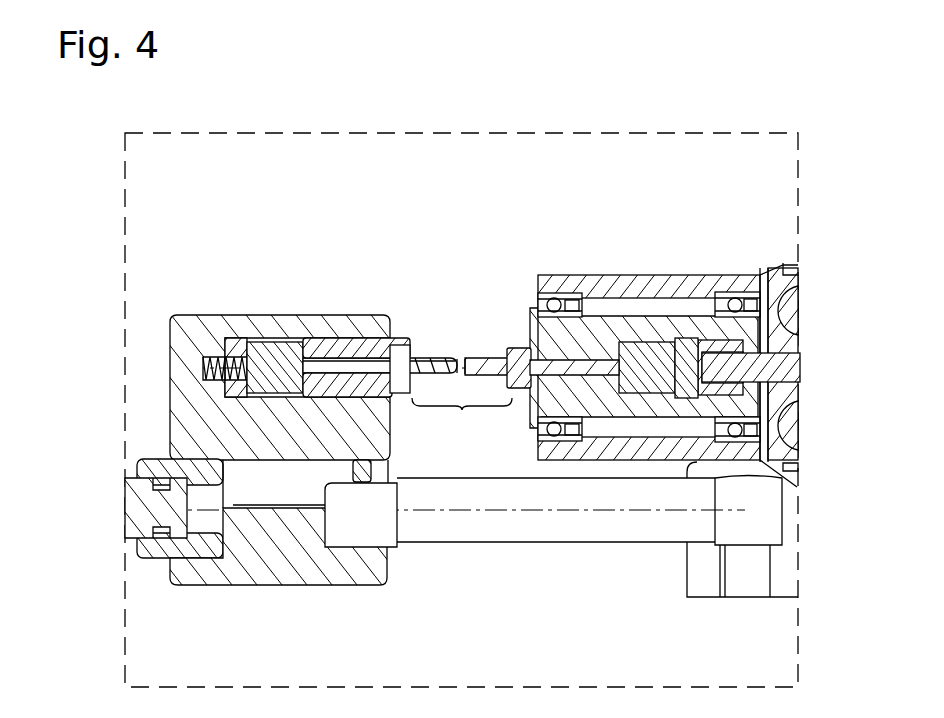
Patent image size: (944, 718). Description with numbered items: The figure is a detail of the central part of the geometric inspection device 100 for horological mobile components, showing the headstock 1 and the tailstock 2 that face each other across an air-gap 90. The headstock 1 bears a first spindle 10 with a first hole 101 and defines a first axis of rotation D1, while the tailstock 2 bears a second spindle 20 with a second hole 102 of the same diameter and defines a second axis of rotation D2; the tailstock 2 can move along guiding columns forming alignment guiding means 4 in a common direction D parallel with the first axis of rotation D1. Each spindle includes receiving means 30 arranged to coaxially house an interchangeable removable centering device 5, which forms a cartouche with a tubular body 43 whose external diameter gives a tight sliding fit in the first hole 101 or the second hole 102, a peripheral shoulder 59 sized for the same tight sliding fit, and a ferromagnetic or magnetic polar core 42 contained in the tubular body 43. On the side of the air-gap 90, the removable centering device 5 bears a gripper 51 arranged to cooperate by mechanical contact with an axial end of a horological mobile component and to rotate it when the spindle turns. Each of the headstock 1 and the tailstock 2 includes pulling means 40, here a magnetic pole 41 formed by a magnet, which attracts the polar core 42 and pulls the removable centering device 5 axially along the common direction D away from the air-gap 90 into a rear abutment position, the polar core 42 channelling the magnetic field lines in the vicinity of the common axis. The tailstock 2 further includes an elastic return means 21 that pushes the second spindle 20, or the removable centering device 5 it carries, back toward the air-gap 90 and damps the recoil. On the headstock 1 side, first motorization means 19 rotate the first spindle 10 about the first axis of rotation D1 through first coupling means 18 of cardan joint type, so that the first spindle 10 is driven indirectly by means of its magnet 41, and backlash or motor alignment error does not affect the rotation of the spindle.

The headstock 1 is at (610, 275).
The tailstock 2 is at (182, 315).
The alignment guiding means 4 is at (515, 559).
The removable centering device 5 is at (430, 343).
The first spindle 10 is at (540, 328).
The first coupling means 18 is at (735, 343).
The first motorization means 19 is at (798, 362).
The second spindle 20 is at (343, 349).
The elastic return means 21 is at (203, 362).
The receiving means 30 is at (376, 344).
The pulling means 40 is at (258, 400).
The magnetic pole 41 is at (645, 392).
The polar core 42 is at (320, 374).
The tubular body 43 is at (684, 345).
The gripper 51 is at (460, 341).
The peripheral shoulder 59 is at (400, 345).
The air-gap 90 is at (463, 424).
The geometric inspection device 100 is at (436, 256).
The first hole 101 is at (558, 282).
The second hole 102 is at (360, 398).
The common direction D is at (465, 392).
The first axis of rotation D1 is at (627, 348).
The second axis of rotation D2 is at (212, 348).